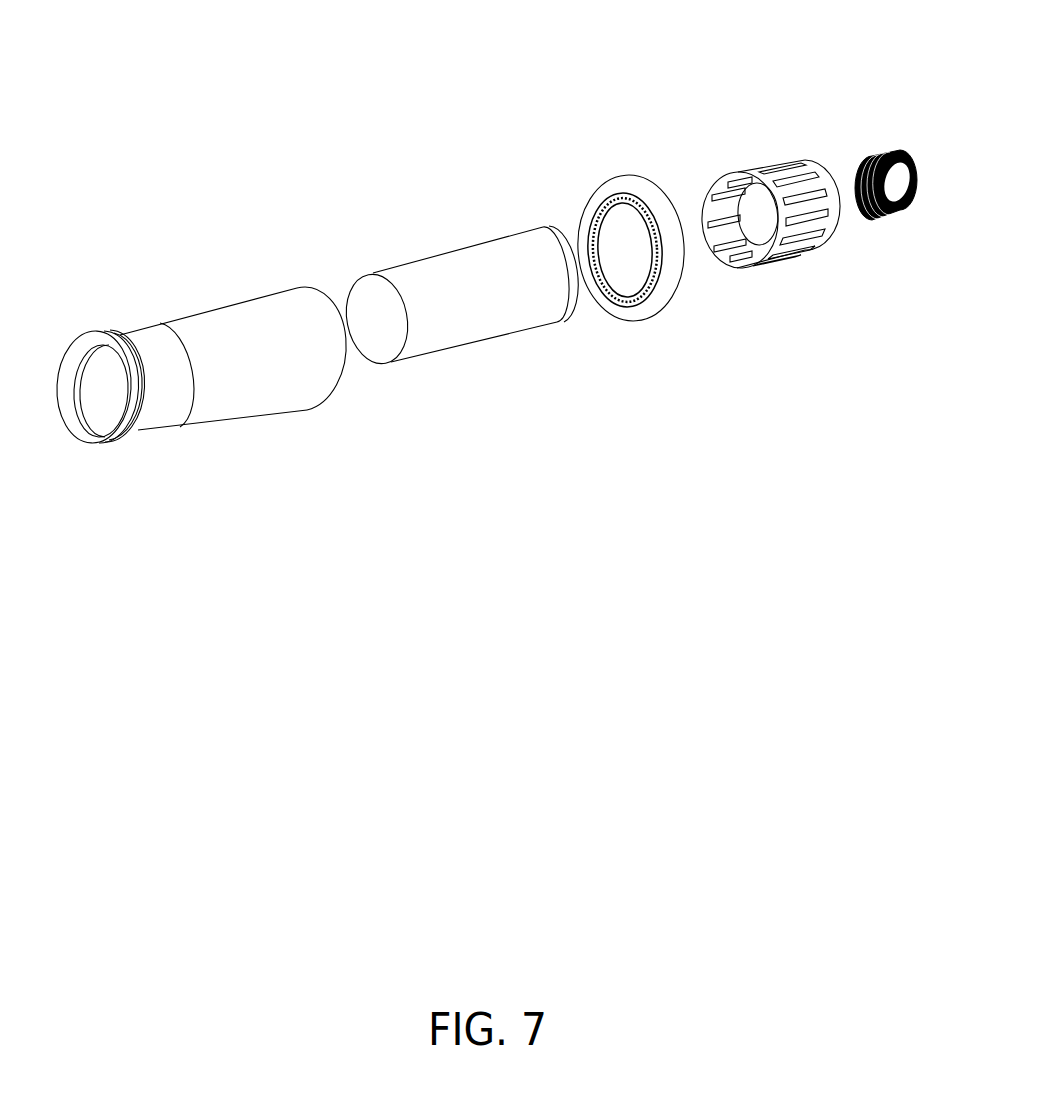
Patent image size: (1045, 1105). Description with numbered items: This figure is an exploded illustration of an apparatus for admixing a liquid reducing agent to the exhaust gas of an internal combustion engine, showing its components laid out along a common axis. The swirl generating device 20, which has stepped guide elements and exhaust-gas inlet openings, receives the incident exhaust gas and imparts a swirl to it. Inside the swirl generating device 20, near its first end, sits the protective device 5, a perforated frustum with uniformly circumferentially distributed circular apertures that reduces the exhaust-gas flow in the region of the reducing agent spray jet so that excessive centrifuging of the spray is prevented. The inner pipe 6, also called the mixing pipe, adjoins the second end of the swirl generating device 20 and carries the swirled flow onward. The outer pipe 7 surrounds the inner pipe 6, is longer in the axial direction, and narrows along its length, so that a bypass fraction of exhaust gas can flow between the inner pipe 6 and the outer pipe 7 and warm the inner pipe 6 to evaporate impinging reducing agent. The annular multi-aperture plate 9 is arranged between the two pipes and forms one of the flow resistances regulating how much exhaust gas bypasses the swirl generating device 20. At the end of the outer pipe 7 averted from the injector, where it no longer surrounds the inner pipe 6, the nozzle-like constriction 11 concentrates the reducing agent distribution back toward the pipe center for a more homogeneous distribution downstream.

The nozzle-like constriction 11 is at (119, 322).
The outer pipe 7 is at (232, 310).
The inner pipe 6 is at (457, 267).
The annular multi-aperture plate 9 is at (622, 177).
The swirl generating device 20 is at (729, 142).
The protective device 5 is at (862, 122).